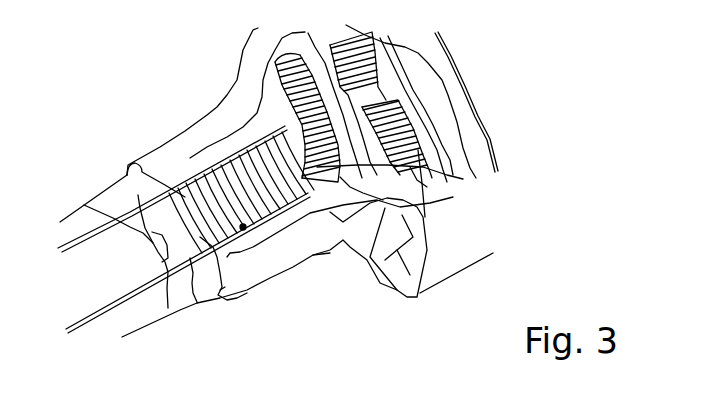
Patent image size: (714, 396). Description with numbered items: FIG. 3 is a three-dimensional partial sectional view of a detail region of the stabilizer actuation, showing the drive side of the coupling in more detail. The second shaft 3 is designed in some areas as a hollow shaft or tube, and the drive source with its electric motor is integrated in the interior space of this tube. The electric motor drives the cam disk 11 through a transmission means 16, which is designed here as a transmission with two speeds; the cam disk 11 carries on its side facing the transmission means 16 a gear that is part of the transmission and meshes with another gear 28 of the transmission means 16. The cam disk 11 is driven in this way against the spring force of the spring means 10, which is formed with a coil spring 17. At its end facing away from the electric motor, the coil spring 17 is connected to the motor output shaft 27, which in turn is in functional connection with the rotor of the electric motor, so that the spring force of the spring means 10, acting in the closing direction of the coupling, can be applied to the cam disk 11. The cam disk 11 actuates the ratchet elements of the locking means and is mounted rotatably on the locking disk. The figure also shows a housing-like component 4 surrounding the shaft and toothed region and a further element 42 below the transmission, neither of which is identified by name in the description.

The second shaft 3 is at (84, 205).
The housing 4 is at (187, 133).
The spring means 10 is at (245, 228).
The cam disk 11 is at (425, 91).
The transmission means 16 is at (295, 60).
The coil spring 17 is at (193, 262).
The motor output shaft 27 is at (463, 179).
The gear 28 is at (447, 52).
The bracket 42 is at (420, 297).